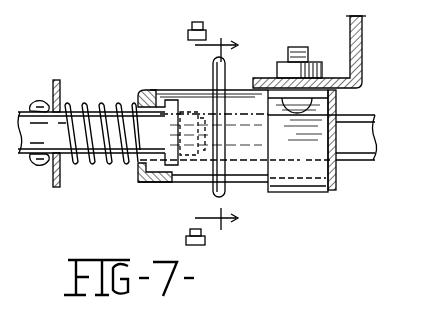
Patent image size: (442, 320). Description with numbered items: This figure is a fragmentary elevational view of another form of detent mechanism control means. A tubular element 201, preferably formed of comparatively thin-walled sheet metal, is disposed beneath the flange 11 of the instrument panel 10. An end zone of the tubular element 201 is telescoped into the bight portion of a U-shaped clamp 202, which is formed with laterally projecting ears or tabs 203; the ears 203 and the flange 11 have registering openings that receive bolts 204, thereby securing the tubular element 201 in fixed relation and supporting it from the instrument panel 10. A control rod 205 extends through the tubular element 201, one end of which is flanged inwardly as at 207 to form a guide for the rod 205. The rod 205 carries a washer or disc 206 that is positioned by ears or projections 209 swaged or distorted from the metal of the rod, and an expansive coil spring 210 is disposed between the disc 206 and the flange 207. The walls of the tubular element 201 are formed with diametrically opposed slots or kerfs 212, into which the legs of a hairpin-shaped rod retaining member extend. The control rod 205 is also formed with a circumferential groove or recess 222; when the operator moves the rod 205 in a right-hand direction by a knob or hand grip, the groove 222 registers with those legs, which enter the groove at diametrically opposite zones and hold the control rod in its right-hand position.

The instrument panel 10 is at (360, 35).
The flange 11 is at (220, 133).
The tubular element 201 is at (182, 186).
The U-shaped clamp 202 is at (306, 186).
The laterally projecting ears 203 is at (326, 98).
The bolts 204 is at (330, 44).
The control rod 205 is at (347, 153).
The washer or disc 206 is at (56, 185).
The inwardly flanged end 207 is at (140, 106).
The ears or projections 209 is at (32, 106).
The expansive coil spring 210 is at (123, 103).
The slots or kerfs 212 is at (230, 142).
The circumferential groove 222 is at (198, 112).